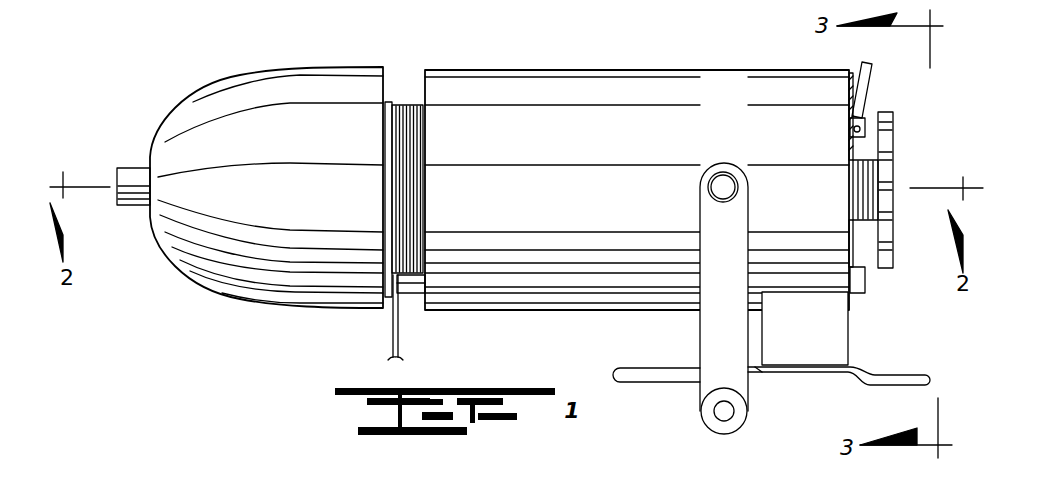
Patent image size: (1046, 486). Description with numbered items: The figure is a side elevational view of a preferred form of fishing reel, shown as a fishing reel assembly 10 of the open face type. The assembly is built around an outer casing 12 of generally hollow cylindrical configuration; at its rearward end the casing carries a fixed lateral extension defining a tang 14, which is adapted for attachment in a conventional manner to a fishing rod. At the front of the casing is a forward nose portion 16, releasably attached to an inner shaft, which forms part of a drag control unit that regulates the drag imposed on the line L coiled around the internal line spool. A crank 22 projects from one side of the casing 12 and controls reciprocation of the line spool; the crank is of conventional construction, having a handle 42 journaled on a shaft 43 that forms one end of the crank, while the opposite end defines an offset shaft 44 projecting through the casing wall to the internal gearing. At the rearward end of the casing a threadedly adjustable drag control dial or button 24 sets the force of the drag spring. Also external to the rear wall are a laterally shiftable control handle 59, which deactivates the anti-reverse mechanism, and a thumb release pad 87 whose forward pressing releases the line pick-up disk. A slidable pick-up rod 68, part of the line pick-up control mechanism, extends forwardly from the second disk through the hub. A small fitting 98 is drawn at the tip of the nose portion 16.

The fishing reel assembly 10 is at (193, 99).
The outer casing 12 is at (552, 312).
The tang 14 is at (840, 328).
The nose portion 16 is at (193, 273).
The crank 22 is at (726, 286).
The drag control dial or button 24 is at (893, 137).
The handle 42 is at (704, 413).
The shaft 43 is at (734, 415).
The offset shaft 44 is at (732, 177).
The control handle 59 is at (865, 285).
The pick-up rod 68 is at (408, 297).
The thumb release pad 87 is at (875, 80).
The nose fitting 98 is at (128, 167).
The line L is at (392, 327).